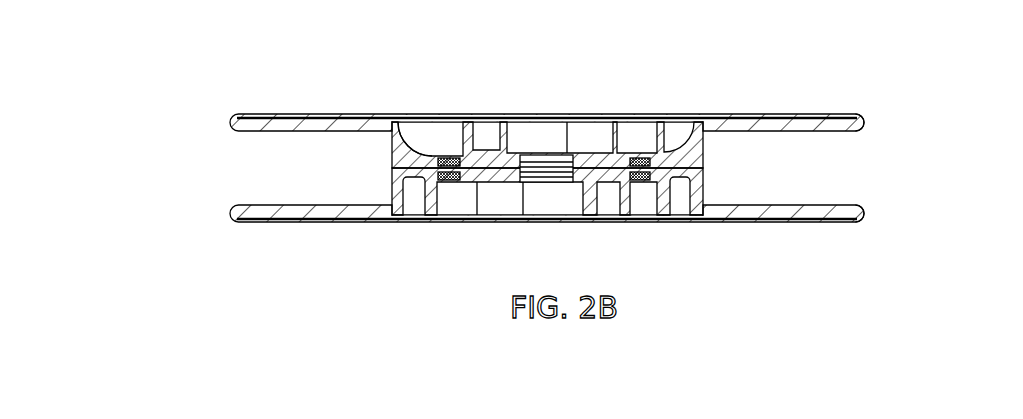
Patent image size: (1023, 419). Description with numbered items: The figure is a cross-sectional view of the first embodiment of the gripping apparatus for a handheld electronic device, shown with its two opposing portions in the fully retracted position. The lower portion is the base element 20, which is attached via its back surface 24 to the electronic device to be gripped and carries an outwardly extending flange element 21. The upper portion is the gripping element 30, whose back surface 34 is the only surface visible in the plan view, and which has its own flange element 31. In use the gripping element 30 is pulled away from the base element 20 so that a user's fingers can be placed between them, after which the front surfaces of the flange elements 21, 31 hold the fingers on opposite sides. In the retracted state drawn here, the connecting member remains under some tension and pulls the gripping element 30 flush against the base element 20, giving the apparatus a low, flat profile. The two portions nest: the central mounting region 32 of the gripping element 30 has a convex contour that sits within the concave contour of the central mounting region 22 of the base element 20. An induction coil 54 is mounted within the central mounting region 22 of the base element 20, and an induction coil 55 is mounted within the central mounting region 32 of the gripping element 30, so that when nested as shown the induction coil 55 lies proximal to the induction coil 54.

The base element 20 is at (571, 231).
The flange element 21 is at (863, 220).
The central mounting region 22 is at (697, 178).
The back surface 24 is at (750, 222).
The gripping element 30 is at (566, 90).
The flange element 31 is at (865, 115).
The central mounting region 32 is at (402, 143).
The back surface 34 is at (333, 113).
The induction coil 54 is at (452, 174).
The induction coil 55 is at (449, 158).